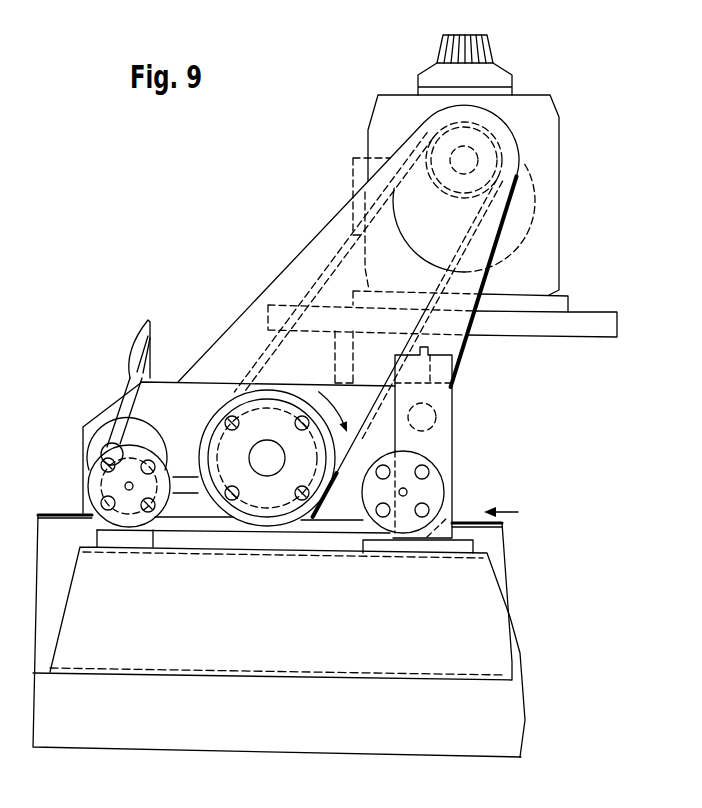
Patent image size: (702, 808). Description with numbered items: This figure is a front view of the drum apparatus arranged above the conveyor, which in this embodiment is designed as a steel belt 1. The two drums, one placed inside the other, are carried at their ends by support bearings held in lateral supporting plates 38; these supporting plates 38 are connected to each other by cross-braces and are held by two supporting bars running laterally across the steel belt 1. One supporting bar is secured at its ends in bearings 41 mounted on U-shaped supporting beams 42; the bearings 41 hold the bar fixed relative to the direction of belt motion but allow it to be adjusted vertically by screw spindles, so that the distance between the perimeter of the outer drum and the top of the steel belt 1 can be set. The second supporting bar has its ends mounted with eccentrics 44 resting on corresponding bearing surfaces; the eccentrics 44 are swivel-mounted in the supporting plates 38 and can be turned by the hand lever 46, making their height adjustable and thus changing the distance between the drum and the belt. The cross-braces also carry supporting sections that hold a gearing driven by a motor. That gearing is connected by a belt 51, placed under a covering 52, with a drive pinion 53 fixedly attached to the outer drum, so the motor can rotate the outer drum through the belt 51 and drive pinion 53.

The steel belt 1 is at (61, 514).
The supporting plates 38 is at (350, 447).
The bearings 41 is at (432, 441).
The U-shaped supporting beams 42 is at (480, 606).
The eccentrics 44 is at (146, 437).
The hand lever 46 is at (149, 335).
The belt 51 is at (410, 408).
The covering 52 is at (478, 280).
The drive pinion 53 is at (297, 528).